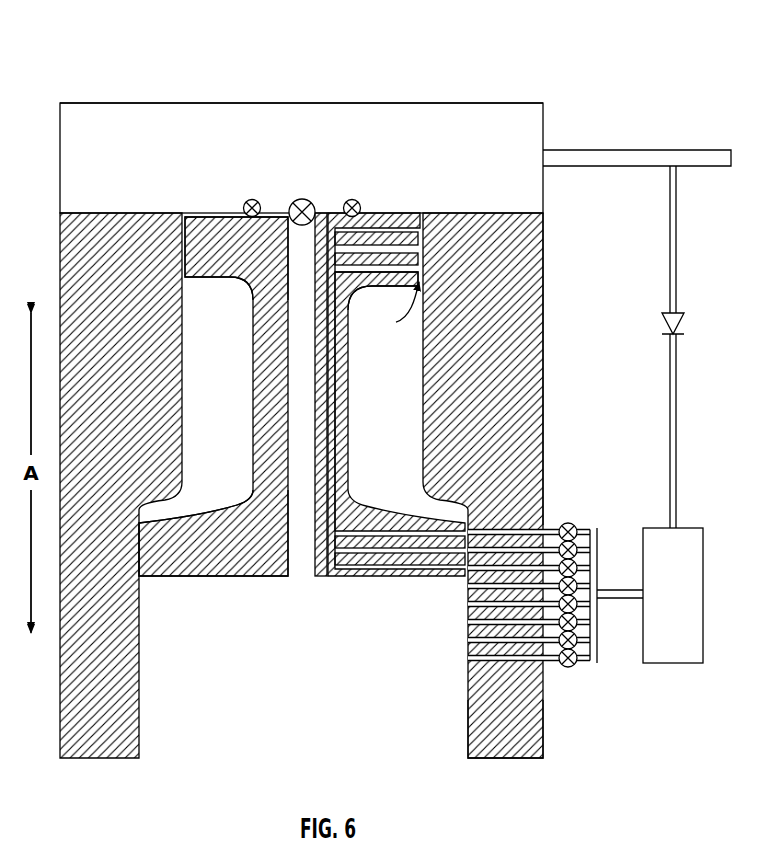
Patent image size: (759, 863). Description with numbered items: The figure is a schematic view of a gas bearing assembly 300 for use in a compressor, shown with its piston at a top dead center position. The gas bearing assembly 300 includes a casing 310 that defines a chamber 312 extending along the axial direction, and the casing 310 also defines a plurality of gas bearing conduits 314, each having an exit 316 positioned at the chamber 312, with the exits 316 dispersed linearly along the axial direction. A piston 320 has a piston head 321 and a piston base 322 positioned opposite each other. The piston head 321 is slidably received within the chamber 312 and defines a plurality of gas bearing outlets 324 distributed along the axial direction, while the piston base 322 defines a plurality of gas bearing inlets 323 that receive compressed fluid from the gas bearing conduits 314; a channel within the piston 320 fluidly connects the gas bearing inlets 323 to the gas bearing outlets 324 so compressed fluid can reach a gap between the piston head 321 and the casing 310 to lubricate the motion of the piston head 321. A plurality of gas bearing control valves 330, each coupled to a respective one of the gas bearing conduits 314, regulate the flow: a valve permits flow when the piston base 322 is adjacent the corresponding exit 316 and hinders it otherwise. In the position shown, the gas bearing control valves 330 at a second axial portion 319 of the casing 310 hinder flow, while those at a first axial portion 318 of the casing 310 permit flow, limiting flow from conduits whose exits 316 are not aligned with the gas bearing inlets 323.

The gas bearing assembly 300 is at (62, 76).
The casing 310 is at (60, 302).
The chamber 312 is at (390, 374).
The gas bearing conduits 314 is at (528, 545).
The exit 316 is at (465, 626).
The first axial portion 318 is at (549, 419).
The second axial portion 319 is at (550, 724).
The piston 320 is at (302, 425).
The piston head 321 is at (203, 280).
The piston base 322 is at (203, 578).
The gas bearing inlets 323 is at (405, 557).
The gas bearing outlets 324 is at (357, 253).
The gas bearing control valves 330 is at (579, 550).